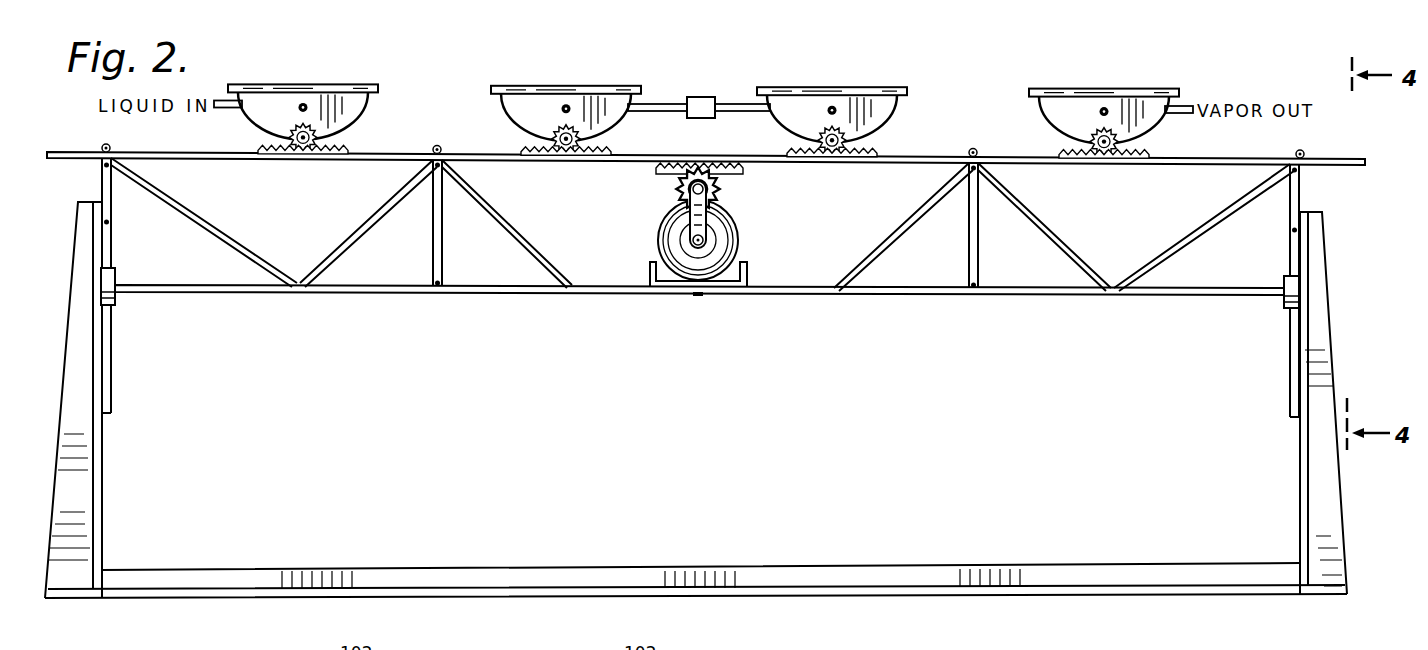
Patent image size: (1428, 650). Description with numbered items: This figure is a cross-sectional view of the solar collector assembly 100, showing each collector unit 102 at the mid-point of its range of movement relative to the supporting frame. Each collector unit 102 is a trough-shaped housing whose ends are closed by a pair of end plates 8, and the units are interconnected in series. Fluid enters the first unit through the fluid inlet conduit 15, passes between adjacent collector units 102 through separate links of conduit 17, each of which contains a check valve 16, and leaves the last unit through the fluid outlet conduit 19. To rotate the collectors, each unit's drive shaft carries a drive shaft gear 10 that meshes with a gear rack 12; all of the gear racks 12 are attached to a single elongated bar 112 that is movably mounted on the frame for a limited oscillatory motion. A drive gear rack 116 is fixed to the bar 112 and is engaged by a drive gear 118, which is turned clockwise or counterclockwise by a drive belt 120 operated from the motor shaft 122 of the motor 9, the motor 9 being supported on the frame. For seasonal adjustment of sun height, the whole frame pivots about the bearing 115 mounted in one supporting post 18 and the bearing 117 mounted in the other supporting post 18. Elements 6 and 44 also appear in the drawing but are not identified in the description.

The truss diagonal braces 6 is at (240, 243).
The end plate 8 is at (352, 105).
The motor 9 is at (740, 228).
The drive shaft gear 10 is at (285, 146).
The gear rack 12 is at (333, 154).
The fluid inlet conduit 15 is at (229, 112).
The check valve 16 is at (698, 98).
The conduit 17 is at (742, 103).
The supporting post 18 is at (82, 463).
The fluid outlet conduit 19 is at (1178, 114).
The pivot pin 44 is at (826, 109).
The assembly 100 is at (1350, 148).
The collector unit 102 is at (321, 78).
The elongated bar 112 is at (1335, 166).
The bearing 115 is at (1283, 302).
The drive gear rack 116 is at (735, 172).
The bearing 117 is at (115, 298).
The drive gear 118 is at (678, 191).
The drive belt 120 is at (678, 218).
The motor shaft 122 is at (707, 245).